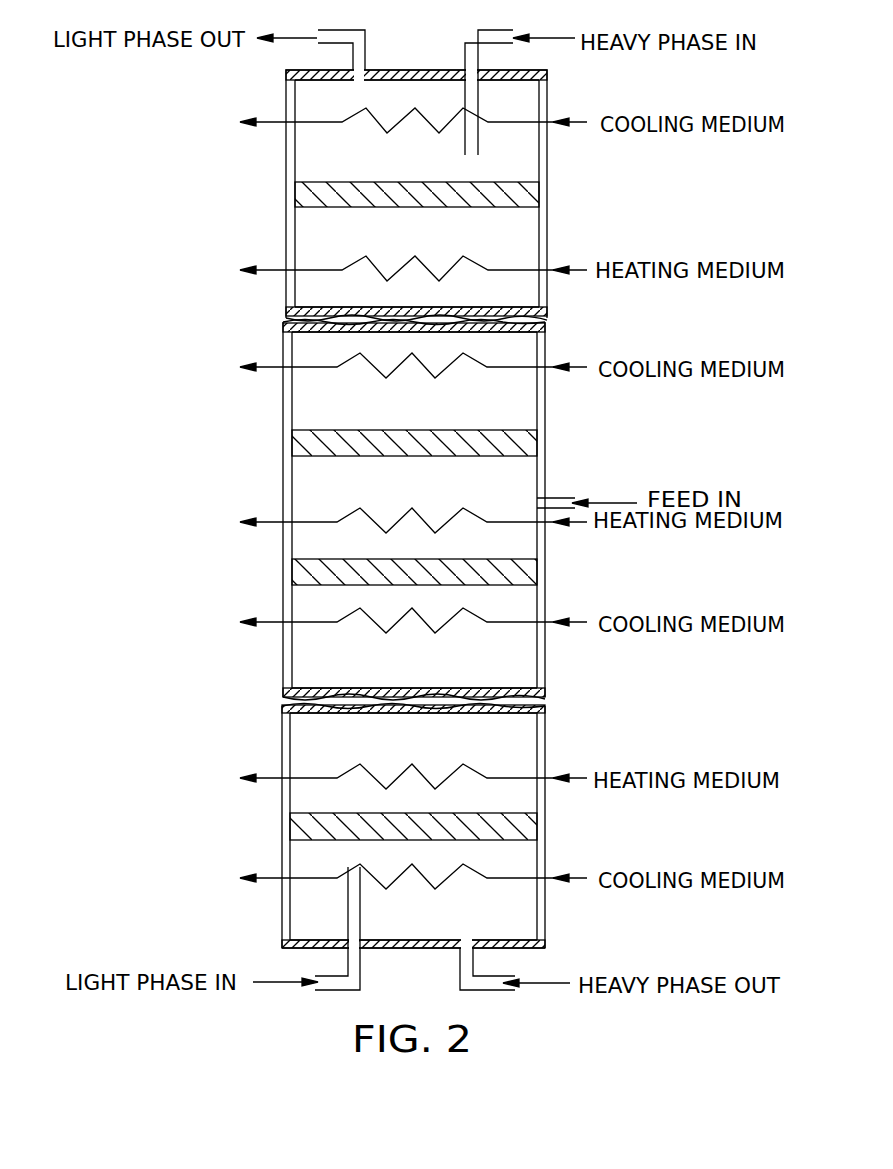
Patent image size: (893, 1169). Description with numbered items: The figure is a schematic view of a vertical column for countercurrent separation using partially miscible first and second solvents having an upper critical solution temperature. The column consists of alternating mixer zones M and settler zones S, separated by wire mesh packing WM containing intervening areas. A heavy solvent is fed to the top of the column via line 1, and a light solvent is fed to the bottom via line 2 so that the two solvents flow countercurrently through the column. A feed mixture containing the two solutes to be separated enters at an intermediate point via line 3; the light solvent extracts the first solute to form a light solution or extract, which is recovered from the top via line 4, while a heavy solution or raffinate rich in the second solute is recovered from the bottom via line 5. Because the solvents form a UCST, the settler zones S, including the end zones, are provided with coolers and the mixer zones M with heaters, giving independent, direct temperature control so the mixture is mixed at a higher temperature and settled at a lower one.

The line 1 is at (520, 84).
The line 2 is at (306, 939).
The line 3 is at (587, 493).
The line 4 is at (311, 46).
The line 5 is at (515, 976).
The settler zones S is at (286, 158).
The mixer zones M is at (286, 238).
The wire mesh packing WM is at (320, 828).